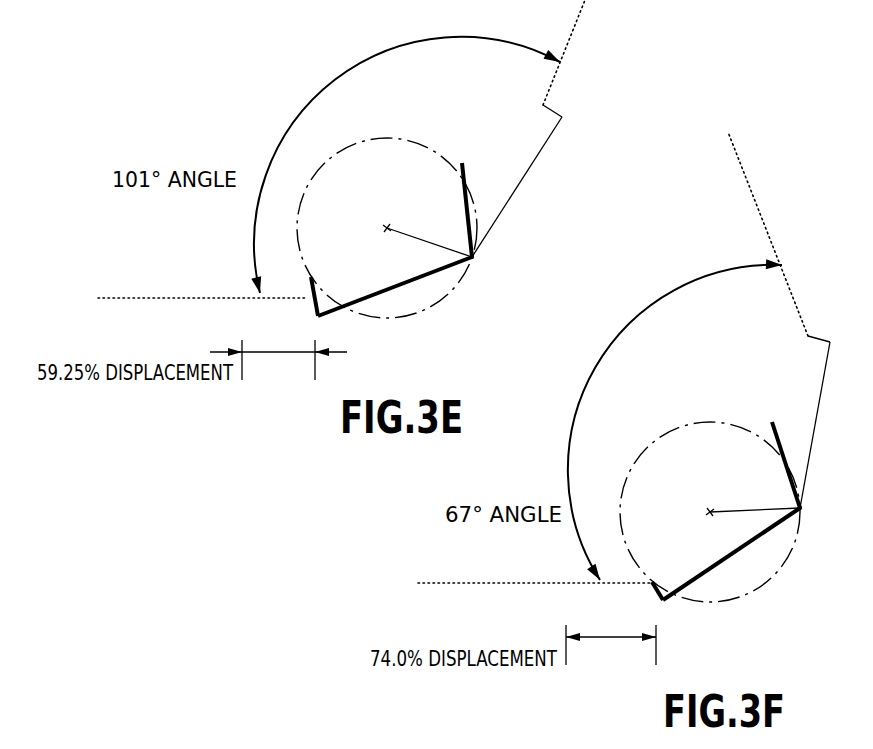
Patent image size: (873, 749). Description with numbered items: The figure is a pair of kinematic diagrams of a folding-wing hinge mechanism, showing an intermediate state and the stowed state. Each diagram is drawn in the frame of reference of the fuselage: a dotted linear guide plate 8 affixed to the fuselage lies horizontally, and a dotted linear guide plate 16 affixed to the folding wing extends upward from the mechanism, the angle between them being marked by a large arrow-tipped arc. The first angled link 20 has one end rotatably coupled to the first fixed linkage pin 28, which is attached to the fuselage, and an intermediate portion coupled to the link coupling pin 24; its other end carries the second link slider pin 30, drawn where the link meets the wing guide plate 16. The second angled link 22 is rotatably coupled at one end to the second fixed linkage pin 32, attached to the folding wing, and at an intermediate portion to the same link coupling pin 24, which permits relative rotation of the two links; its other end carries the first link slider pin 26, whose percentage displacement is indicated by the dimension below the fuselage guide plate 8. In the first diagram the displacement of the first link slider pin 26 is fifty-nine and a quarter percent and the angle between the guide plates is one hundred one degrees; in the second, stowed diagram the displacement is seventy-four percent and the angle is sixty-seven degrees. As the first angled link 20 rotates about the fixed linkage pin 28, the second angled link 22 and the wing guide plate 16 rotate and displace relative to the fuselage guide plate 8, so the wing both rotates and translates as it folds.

In FIG. 3E, the linear guide plate 8 is at (127, 295).
In FIG. 3F, the linear guide plate 8 is at (447, 582).
In FIG. 3F, the linear guide plate 16 is at (753, 193).
In FIG. 3E, the first angled link 20 is at (515, 188).
In FIG. 3F, the first angled link 20 is at (812, 447).
In FIG. 3E, the second angled link 22 is at (447, 265).
In FIG. 3F, the second angled link 22 is at (688, 585).
In FIG. 3E, the link coupling pin 24 is at (477, 258).
In FIG. 3F, the link coupling pin 24 is at (802, 512).
In FIG. 3E, the first link slider pin 26 is at (312, 275).
In FIG. 3F, the first link slider pin 26 is at (653, 580).
In FIG. 3E, the first fixed linkage pin 28 is at (388, 226).
In FIG. 3F, the first fixed linkage pin 28 is at (708, 512).
In FIG. 3E, the second link slider pin 30 is at (545, 104).
In FIG. 3F, the second link slider pin 30 is at (808, 338).
In FIG. 3E, the second fixed linkage pin 32 is at (462, 167).
In FIG. 3F, the second fixed linkage pin 32 is at (772, 420).